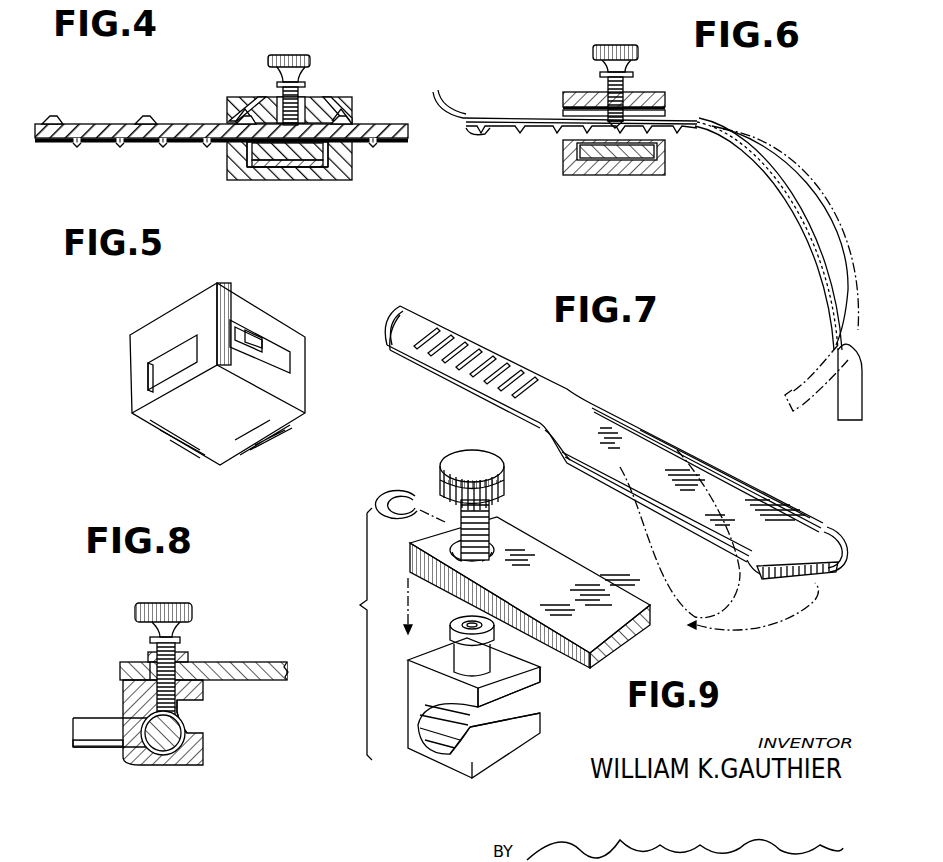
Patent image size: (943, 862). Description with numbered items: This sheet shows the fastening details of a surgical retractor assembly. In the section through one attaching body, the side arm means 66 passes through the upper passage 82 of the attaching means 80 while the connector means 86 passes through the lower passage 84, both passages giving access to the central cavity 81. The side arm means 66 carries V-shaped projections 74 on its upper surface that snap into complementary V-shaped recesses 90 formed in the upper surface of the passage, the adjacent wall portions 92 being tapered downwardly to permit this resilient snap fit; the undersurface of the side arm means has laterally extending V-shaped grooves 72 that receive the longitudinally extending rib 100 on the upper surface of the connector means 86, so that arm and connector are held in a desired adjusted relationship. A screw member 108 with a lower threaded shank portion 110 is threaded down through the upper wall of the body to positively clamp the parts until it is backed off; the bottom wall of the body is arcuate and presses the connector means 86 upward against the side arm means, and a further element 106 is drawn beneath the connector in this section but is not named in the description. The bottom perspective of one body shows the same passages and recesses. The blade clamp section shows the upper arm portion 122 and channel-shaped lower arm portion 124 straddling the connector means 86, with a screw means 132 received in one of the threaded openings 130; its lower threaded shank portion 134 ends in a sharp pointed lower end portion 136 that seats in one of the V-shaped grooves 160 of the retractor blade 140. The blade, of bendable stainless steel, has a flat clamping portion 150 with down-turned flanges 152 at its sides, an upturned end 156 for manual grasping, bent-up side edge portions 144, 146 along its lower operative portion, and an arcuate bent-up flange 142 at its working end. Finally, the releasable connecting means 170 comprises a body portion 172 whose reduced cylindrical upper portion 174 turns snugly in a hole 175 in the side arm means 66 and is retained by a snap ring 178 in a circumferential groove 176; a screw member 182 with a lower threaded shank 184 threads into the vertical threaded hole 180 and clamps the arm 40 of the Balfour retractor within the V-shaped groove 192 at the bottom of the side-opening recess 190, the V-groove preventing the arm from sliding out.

In FIG. 8, the arm 40 is at (98, 755).
In FIG. 4, the side arm means 66 is at (97, 143).
In FIG. 8, the side arm means 66 is at (280, 664).
In FIG. 9, the side arm means 66 is at (560, 580).
In FIG. 4, the laterally extending grooves 72 is at (72, 146).
In FIG. 4, the projections 74 is at (143, 116).
In FIG. 4, the attaching means 80 is at (343, 182).
In FIG. 5, the attaching means 80 is at (226, 288).
In FIG. 4, the central cavity 81 is at (313, 112).
In FIG. 4, the passage 82 is at (345, 148).
In FIG. 5, the passage 82 is at (290, 363).
In FIG. 5, the passage 84 is at (150, 358).
In FIG. 4, the connector means 86 is at (258, 181).
In FIG. 6, the connector means 86 is at (640, 150).
In FIG. 4, the recesses 90 is at (253, 105).
In FIG. 5, the recesses 90 is at (272, 330).
In FIG. 4, the wall portions 92 is at (232, 116).
In FIG. 5, the wall portions 92 is at (247, 325).
In FIG. 4, the longitudinally extending rib 100 is at (305, 181).
In FIG. 4, the lower plate 106 is at (276, 182).
In FIG. 4, the screw member 108 is at (285, 51).
In FIG. 4, the lower threaded shank portion 110 is at (300, 98).
In FIG. 6, the upper arm portion 122 is at (562, 100).
In FIG. 6, the lower arm portion 124 is at (600, 176).
In FIG. 6, the threaded openings 130 is at (627, 86).
In FIG. 6, the screw means 132 is at (617, 26).
In FIG. 6, the lower threaded shank portion 134 is at (605, 85).
In FIG. 6, the sharp pointed lower end portion 136 is at (667, 111).
In FIG. 6, the retractor blade 140 is at (757, 183).
In FIG. 7, the retractor blade 140 is at (600, 385).
In FIG. 6, the arcuate bent-up flange 142 is at (843, 422).
In FIG. 7, the arcuate bent-up flange 142 is at (815, 585).
In FIG. 6, the side edge portion 144 is at (783, 152).
In FIG. 7, the side edge portion 144 is at (727, 470).
In FIG. 7, the side edge portion 146 is at (618, 482).
In FIG. 7, the clamping portion 150 is at (490, 345).
In FIG. 6, the down-turned flanges 152 is at (478, 136).
In FIG. 7, the down-turned flanges 152 is at (458, 395).
In FIG. 6, the manual grasping portion 156 is at (445, 95).
In FIG. 7, the manual grasping portion 156 is at (408, 310).
In FIG. 6, the grooves 160 is at (533, 135).
In FIG. 7, the grooves 160 is at (460, 345).
In FIG. 8, the releasable connecting means 170 is at (200, 610).
In FIG. 8, the body portion 172 is at (125, 700).
In FIG. 9, the body portion 172 is at (420, 680).
In FIG. 8, the reduced cylindrical upper portion 174 is at (223, 662).
In FIG. 9, the reduced cylindrical upper portion 174 is at (545, 670).
In FIG. 9, the hole 175 is at (495, 548).
In FIG. 9, the groove 176 is at (455, 640).
In FIG. 8, the snap ring 178 is at (190, 655).
In FIG. 9, the snap ring 178 is at (395, 490).
In FIG. 8, the threaded hole 180 is at (150, 650).
In FIG. 9, the threaded hole 180 is at (470, 615).
In FIG. 8, the screw member 182 is at (172, 600).
In FIG. 9, the screw member 182 is at (448, 462).
In FIG. 8, the lower threaded shank 184 is at (172, 652).
In FIG. 9, the lower threaded shank 184 is at (485, 535).
In FIG. 8, the recess 190 is at (198, 700).
In FIG. 9, the recess 190 is at (530, 714).
In FIG. 8, the groove 192 is at (163, 755).
In FIG. 9, the groove 192 is at (435, 750).